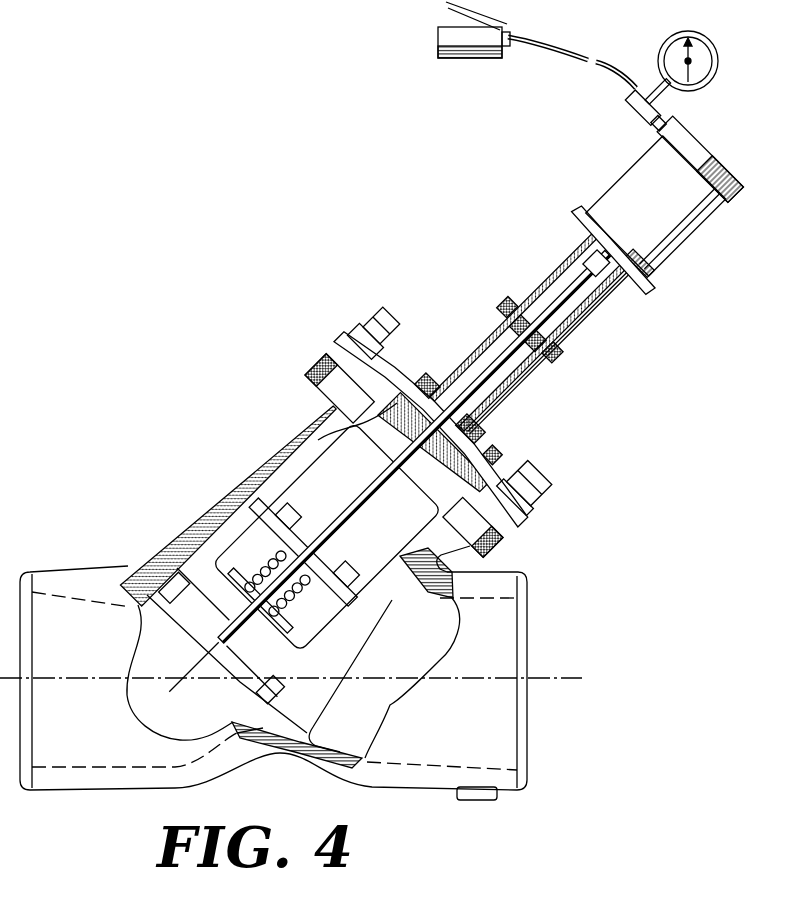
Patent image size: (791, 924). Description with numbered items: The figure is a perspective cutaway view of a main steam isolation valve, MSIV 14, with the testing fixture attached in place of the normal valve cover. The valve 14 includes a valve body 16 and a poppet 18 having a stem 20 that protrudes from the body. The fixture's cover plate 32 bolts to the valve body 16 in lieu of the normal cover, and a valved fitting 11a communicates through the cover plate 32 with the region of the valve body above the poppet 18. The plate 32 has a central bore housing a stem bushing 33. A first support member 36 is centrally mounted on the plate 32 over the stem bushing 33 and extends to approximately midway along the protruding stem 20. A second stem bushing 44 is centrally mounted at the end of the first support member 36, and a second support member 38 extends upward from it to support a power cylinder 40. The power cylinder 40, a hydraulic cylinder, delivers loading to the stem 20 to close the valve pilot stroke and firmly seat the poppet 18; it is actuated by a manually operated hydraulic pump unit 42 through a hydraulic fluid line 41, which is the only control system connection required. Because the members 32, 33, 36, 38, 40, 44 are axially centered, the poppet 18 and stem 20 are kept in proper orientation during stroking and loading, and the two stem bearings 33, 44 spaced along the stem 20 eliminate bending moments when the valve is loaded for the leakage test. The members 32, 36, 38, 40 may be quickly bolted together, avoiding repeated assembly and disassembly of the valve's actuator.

The valved fitting 11a is at (494, 450).
The MSIV 14 is at (516, 552).
The valve body 16 is at (88, 722).
The poppet 18 is at (188, 567).
The stem 20 is at (385, 462).
The cover plate 32 is at (498, 478).
The stem bushing 33 is at (476, 432).
The first support member 36 is at (522, 372).
The second support member 38 is at (573, 320).
The power cylinder 40 is at (660, 247).
The hydraulic fluid line 41 is at (580, 62).
The hydraulic pump unit 42 is at (470, 58).
The second stem bushing 44 is at (502, 338).